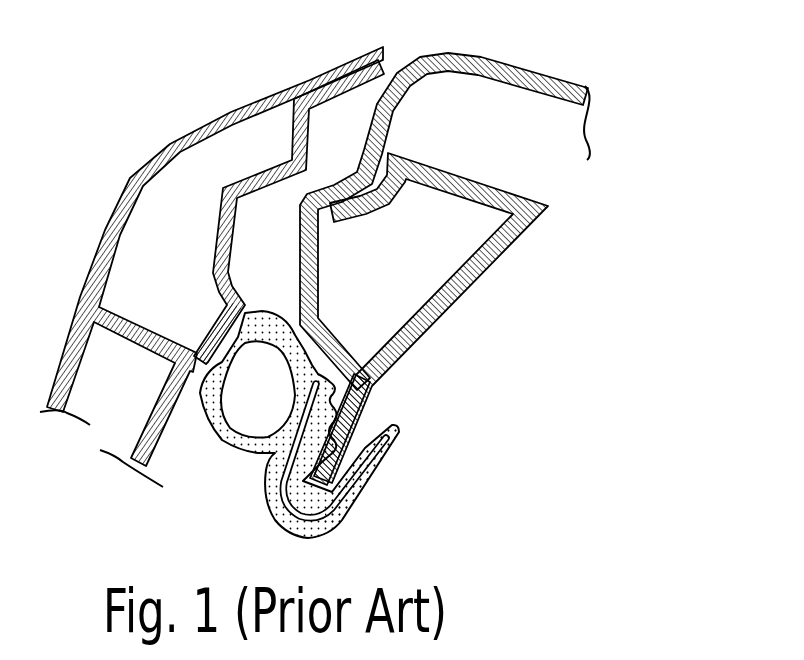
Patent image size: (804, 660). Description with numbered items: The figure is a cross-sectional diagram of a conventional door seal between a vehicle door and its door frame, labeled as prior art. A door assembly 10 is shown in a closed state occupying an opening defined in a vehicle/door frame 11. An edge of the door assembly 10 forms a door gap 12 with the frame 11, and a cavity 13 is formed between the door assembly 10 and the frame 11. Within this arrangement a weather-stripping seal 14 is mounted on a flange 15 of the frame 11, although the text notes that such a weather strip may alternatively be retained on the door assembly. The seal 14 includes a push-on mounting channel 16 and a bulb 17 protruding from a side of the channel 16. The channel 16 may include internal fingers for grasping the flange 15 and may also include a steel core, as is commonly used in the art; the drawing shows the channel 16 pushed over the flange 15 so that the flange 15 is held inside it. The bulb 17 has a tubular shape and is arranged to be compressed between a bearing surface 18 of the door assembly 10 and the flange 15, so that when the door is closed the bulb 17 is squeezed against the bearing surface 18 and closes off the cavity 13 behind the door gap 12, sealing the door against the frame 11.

The door assembly 10 is at (97, 243).
The vehicle/door frame 11 is at (473, 293).
The door gap 12 is at (395, 58).
The cavity 13 is at (282, 256).
The weather-stripping seal 14 is at (315, 425).
The flange 15 is at (360, 422).
The push-on mounting channel 16 is at (350, 514).
The bulb 17 is at (215, 420).
The bearing surface 18 is at (213, 342).